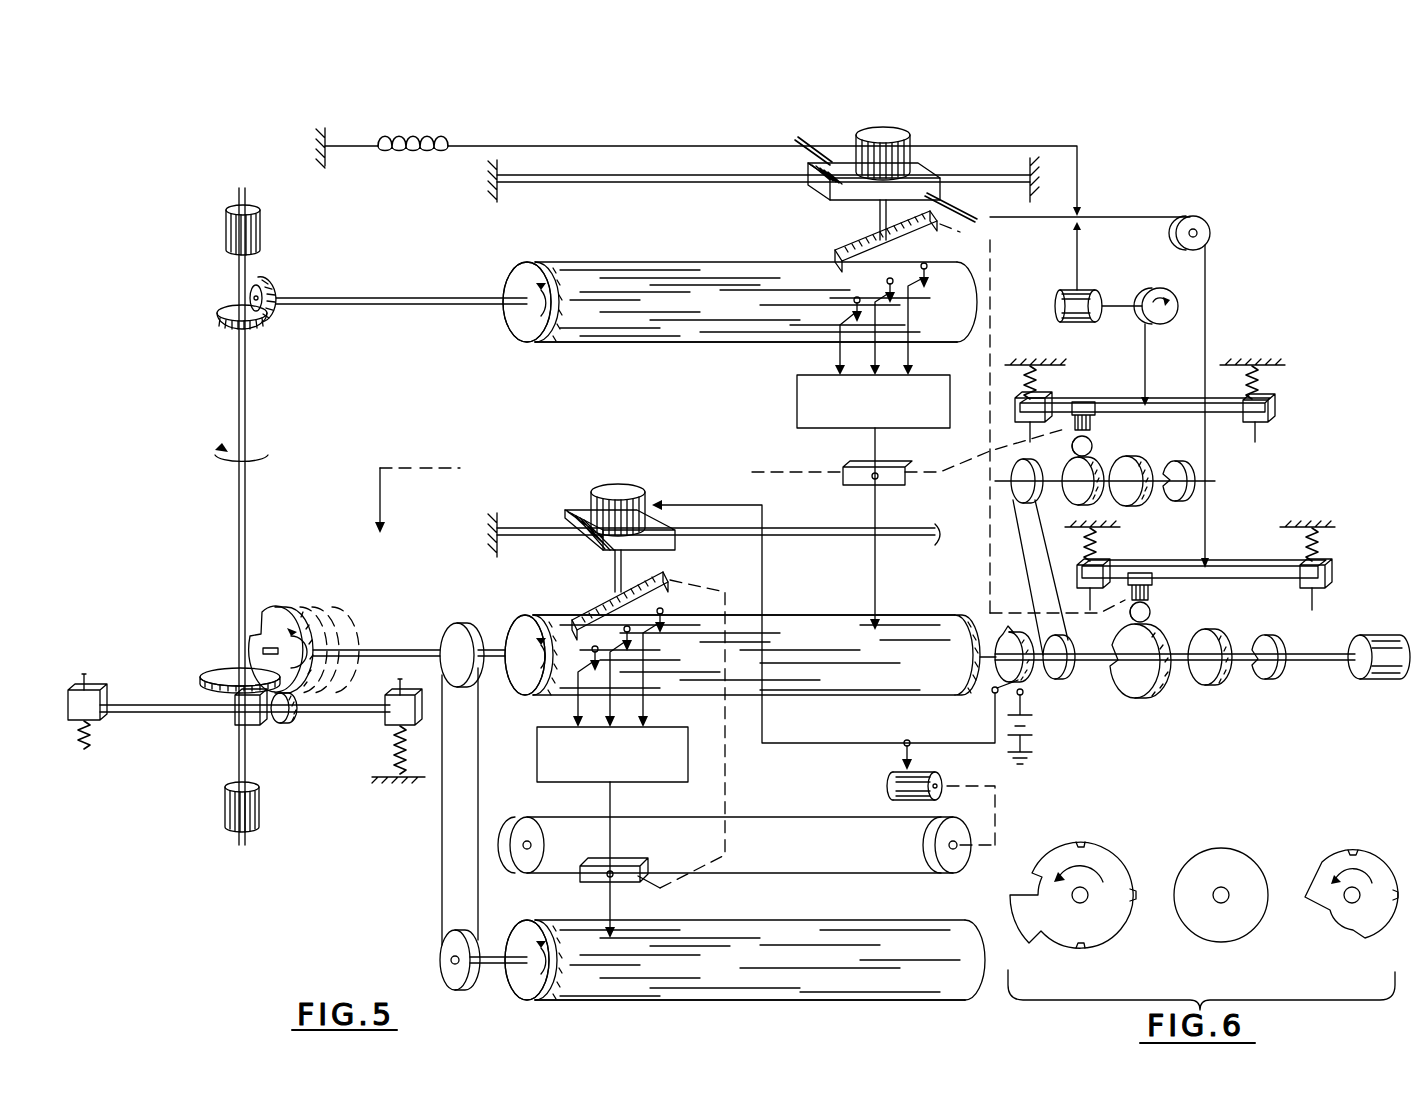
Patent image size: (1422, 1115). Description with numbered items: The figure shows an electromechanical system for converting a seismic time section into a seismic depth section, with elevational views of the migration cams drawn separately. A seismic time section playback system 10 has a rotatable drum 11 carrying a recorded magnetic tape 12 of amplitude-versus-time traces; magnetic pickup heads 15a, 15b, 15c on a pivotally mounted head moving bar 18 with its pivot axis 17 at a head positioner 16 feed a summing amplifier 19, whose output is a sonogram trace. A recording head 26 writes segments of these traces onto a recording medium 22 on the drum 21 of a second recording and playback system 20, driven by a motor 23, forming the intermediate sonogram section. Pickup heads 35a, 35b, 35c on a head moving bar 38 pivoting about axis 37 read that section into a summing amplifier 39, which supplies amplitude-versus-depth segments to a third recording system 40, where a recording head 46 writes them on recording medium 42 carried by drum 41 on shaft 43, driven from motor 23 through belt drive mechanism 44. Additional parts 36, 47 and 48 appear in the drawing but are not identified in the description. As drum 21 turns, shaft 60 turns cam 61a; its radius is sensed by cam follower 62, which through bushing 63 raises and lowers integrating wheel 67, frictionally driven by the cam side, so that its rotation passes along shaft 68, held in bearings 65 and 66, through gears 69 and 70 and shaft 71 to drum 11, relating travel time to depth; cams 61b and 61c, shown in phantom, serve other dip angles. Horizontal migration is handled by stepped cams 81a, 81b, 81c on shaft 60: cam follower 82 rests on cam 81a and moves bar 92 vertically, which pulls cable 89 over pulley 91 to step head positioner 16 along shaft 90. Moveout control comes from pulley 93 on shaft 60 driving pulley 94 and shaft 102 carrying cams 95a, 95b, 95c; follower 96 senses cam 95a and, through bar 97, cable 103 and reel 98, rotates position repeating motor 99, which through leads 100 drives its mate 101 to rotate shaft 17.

In FIG. 5, the seismic time section playback system 10 is at (695, 352).
In FIG. 5, the rotatable drum 11 is at (518, 280).
In FIG. 5, the recorded magnetic tape 12 is at (722, 310).
In FIG. 5, the magnetic pickup head 15a is at (848, 315).
In FIG. 5, the magnetic pickup head 15b is at (898, 292).
In FIG. 5, the magnetic pickup head 15c is at (932, 276).
In FIG. 5, the head positioner 16 is at (830, 192).
In FIG. 5, the pivot axis 17 is at (878, 215).
In FIG. 5, the head moving bar 18 is at (838, 258).
In FIG. 5, the summing amplifier 19 is at (797, 398).
In FIG. 5, the second recording and playback system 20 is at (802, 608).
In FIG. 5, the rotatable drum 21 is at (520, 628).
In FIG. 5, the recording medium 22 is at (804, 649).
In FIG. 5, the motor 23 is at (1372, 636).
In FIG. 5, the recording head 26 is at (870, 630).
In FIG. 5, the magnetic pickup head 35a is at (604, 660).
In FIG. 5, the magnetic pickup head 35b is at (636, 642).
In FIG. 5, the magnetic pickup head 35c is at (668, 628).
In FIG. 5, the sensor positioning motor 36 is at (590, 504).
In FIG. 5, the pivot axis 37 is at (612, 565).
In FIG. 5, the head moving bar 38 is at (588, 612).
In FIG. 5, the summing amplifier 39 is at (537, 754).
In FIG. 5, the third recording system 40 is at (845, 1008).
In FIG. 5, the rotatable drum 41 is at (520, 938).
In FIG. 5, the recording medium 42 is at (767, 969).
In FIG. 5, the shaft 43 is at (492, 968).
In FIG. 5, the belt drive mechanism 44 is at (440, 845).
In FIG. 5, the recording head 46 is at (615, 942).
In FIG. 5, the motor 47 is at (890, 782).
In FIG. 5, the roller 48 is at (748, 826).
In FIG. 5, the shaft 60 is at (390, 648).
In FIG. 5, the cam 61a is at (282, 608).
In FIG. 5, the cam 61b is at (318, 608).
In FIG. 5, the cam 61c is at (346, 612).
In FIG. 5, the cam follower 62 is at (287, 722).
In FIG. 5, the bushing 63 is at (236, 722).
In FIG. 5, the bearing 65 is at (260, 808).
In FIG. 5, the bearing 66 is at (225, 228).
In FIG. 5, the integrating wheel 67 is at (218, 665).
In FIG. 5, the shaft 68 is at (238, 540).
In FIG. 5, the gear 69 is at (228, 330).
In FIG. 5, the gear 70 is at (278, 290).
In FIG. 5, the shaft 71 is at (408, 310).
In FIG. 5, the cam 81a is at (1148, 700).
In FIG. 6, the cam 81a is at (1117, 942).
In FIG. 5, the cam 81b is at (1220, 688).
In FIG. 6, the cam 81b is at (1245, 935).
In FIG. 5, the cam 81c is at (1278, 684).
In FIG. 6, the cam 81c is at (1323, 860).
In FIG. 5, the cam follower 82 is at (1152, 615).
In FIG. 5, the cable 89 is at (1208, 306).
In FIG. 5, the shaft 90 is at (668, 183).
In FIG. 5, the pulley 91 is at (1212, 228).
In FIG. 5, the bar 92 is at (1238, 564).
In FIG. 5, the pulley 93 is at (1055, 682).
In FIG. 5, the pulley 94 is at (1010, 488).
In FIG. 5, the cam 95a is at (1105, 468).
In FIG. 5, the cam 95b is at (1140, 502).
In FIG. 5, the cam 95c is at (1192, 474).
In FIG. 5, the follower 96 is at (1095, 442).
In FIG. 5, the bar 97 is at (1168, 400).
In FIG. 5, the reel 98 is at (1153, 288).
In FIG. 5, the position repeating motor 99 is at (1093, 290).
In FIG. 5, the leads 100 is at (1083, 170).
In FIG. 5, the mate motor 101 is at (912, 146).
In FIG. 5, the shaft 102 is at (1212, 481).
In FIG. 5, the cable 103 is at (1143, 366).